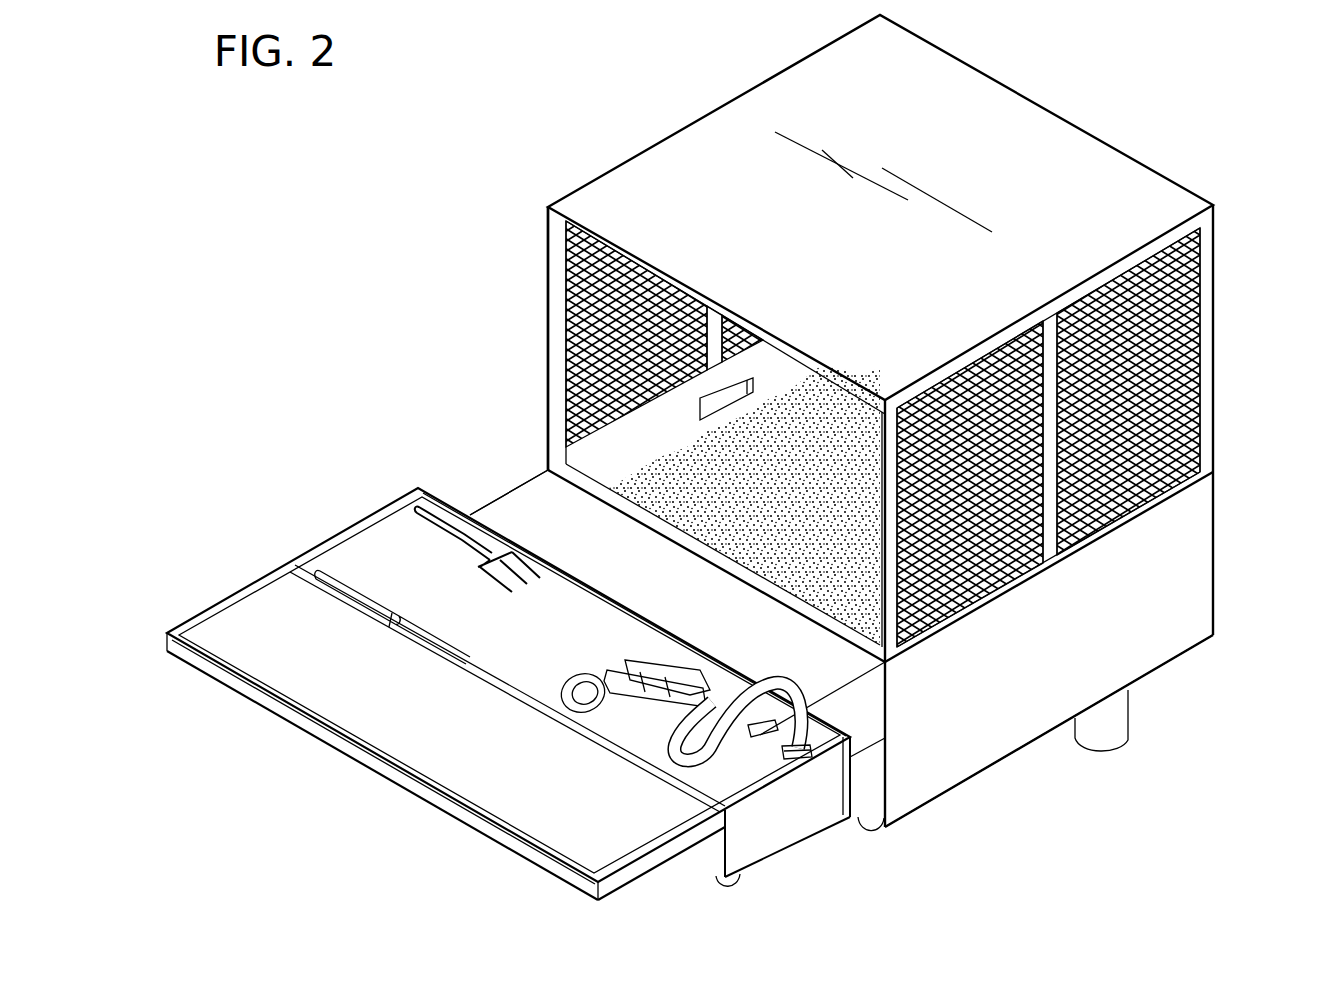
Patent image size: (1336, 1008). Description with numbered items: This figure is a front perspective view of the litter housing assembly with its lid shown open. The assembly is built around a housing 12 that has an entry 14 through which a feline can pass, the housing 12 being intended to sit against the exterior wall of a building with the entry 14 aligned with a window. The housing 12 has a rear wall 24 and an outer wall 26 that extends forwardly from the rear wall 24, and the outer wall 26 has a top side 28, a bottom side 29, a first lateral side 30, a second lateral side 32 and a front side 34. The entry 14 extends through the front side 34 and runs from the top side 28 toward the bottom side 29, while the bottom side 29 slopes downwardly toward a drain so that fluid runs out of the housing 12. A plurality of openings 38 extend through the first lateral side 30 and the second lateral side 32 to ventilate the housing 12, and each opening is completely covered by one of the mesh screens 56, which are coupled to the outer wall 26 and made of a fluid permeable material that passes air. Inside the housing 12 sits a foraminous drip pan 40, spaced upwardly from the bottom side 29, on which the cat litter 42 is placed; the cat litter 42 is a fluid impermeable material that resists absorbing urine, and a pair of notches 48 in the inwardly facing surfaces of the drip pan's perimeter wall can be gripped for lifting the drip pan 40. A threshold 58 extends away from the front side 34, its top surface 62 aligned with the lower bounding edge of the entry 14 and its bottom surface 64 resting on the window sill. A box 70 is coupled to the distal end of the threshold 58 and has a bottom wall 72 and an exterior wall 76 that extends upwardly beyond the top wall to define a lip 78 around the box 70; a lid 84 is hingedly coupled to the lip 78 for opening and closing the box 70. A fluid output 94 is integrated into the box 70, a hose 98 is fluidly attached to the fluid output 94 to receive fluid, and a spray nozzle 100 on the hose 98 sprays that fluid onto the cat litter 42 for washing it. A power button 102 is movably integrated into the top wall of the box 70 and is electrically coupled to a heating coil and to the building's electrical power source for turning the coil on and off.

The housing 12 is at (866, 13).
The entry 14 is at (574, 307).
The rear wall 24 is at (1215, 517).
The outer wall 26 is at (1033, 115).
The top side 28 is at (1217, 640).
The bottom side 29 is at (1010, 757).
The first lateral side 30 is at (548, 248).
The second lateral side 32 is at (1047, 707).
The front side 34 is at (873, 820).
The openings 38 is at (1037, 383).
The drip pan 40 is at (590, 447).
The cat litter 42 is at (740, 500).
The notches 48 is at (694, 390).
The mesh screens 56 is at (993, 397).
The threshold 58 is at (508, 660).
The top surface 62 is at (533, 508).
The bottom surface 64 is at (885, 757).
The box 70 is at (320, 543).
The bottom wall 72 is at (787, 853).
The exterior wall 76 is at (713, 865).
The lip 78 is at (360, 520).
The lid 84 is at (560, 878).
The fluid output 94 is at (790, 760).
The hose 98 is at (660, 750).
The spray nozzle 100 is at (565, 687).
The power button 102 is at (890, 662).